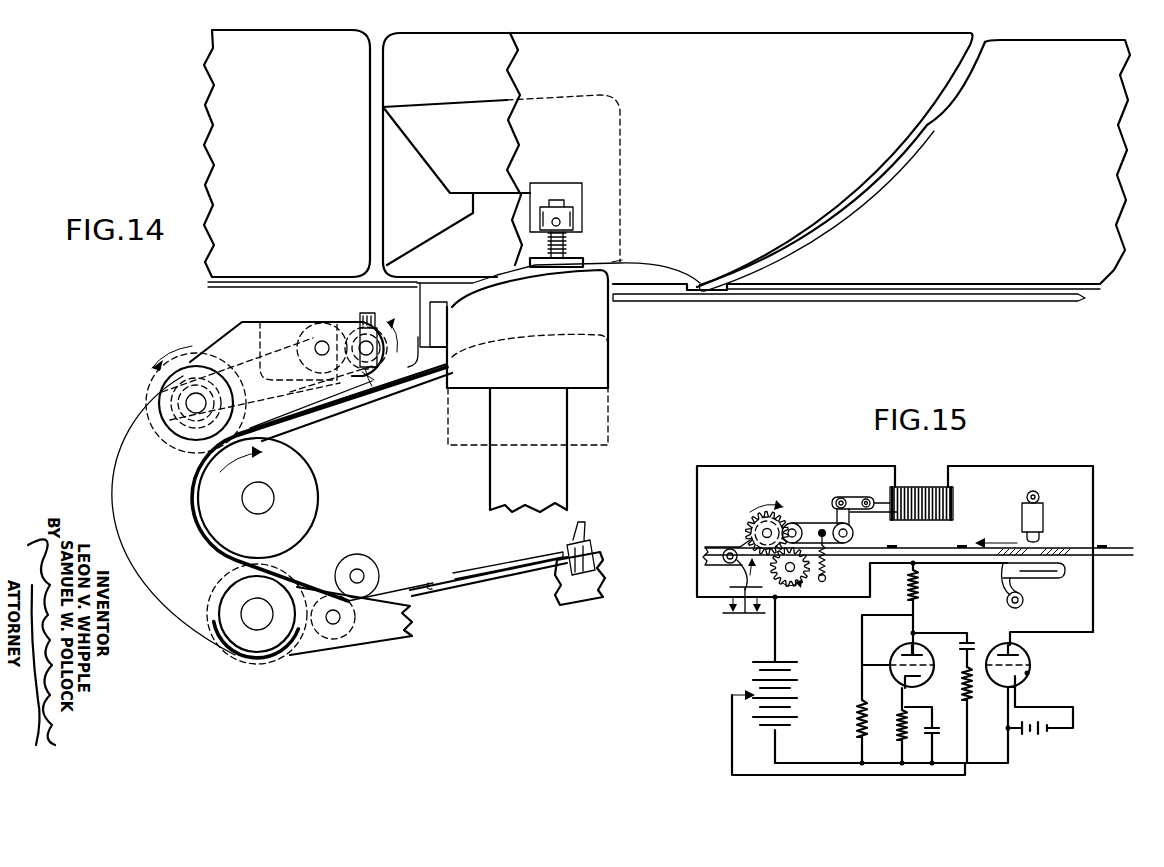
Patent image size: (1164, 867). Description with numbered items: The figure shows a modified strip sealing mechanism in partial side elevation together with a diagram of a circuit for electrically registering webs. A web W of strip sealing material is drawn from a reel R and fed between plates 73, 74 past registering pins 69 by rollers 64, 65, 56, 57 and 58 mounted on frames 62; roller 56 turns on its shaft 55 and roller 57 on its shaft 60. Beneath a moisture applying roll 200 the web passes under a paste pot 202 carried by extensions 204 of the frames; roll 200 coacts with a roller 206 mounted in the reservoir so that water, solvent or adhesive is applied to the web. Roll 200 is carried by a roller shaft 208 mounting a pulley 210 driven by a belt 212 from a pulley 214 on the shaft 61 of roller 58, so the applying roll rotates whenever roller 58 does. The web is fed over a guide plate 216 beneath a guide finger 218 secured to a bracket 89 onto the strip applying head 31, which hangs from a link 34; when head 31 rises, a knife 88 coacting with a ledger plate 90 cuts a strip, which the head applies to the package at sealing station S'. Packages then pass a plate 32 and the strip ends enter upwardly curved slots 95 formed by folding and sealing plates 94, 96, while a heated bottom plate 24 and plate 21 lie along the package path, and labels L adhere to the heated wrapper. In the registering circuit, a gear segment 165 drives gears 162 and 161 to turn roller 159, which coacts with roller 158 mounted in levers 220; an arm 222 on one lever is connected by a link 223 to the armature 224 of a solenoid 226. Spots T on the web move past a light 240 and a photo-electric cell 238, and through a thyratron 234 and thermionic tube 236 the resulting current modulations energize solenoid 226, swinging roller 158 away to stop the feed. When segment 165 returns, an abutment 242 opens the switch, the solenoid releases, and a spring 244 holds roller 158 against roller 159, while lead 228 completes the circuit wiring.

In FIG. 14, the plate 21 is at (288, 45).
In FIG. 14, the folding and sealing plate 94 is at (698, 55).
In FIG. 14, the upwardly curved slots 95 is at (877, 158).
In FIG. 14, the folding-sealing plate 96 is at (1030, 52).
In FIG. 14, the plate 32 is at (896, 300).
In FIG. 14, the heated bottom plate 24 is at (240, 282).
In FIG. 14, the label L is at (488, 282).
In FIG. 14, the sealing station S' is at (632, 247).
In FIG. 14, the ledger plate 90 is at (428, 292).
In FIG. 14, the bracket 89 is at (441, 308).
In FIG. 14, the guide finger 218 is at (418, 368).
In FIG. 14, the knife 88 is at (455, 330).
In FIG. 14, the strip applying head 31 is at (598, 318).
In FIG. 14, the link 34 is at (563, 468).
In FIG. 14, the extensions 204 is at (243, 328).
In FIG. 14, the paste pot 202 is at (268, 327).
In FIG. 14, the roller 206 is at (319, 340).
In FIG. 14, the moisture applying roll 200 is at (396, 340).
In FIG. 14, the roller shaft 208 is at (372, 386).
In FIG. 14, the guide plate 216 is at (372, 388).
In FIG. 14, the belt 212 is at (290, 395).
In FIG. 14, the pulley 210 is at (352, 380).
In FIG. 14, the pulley 214 is at (165, 397).
In FIG. 14, the roller 58 is at (160, 378).
In FIG. 14, the shaft 61 is at (187, 404).
In FIG. 14, the frames 62 is at (172, 612).
In FIG. 14, the roller 56 is at (306, 484).
In FIG. 14, the shaft 55 is at (272, 500).
In FIG. 14, the shaft 60 is at (257, 617).
In FIG. 14, the roller 57 is at (275, 658).
In FIG. 14, the roller 64 is at (343, 640).
In FIG. 14, the roller 65 is at (370, 566).
In FIG. 14, the web W is at (431, 582).
In FIG. 15, the web W is at (1117, 565).
In FIG. 14, the plate 73 is at (503, 573).
In FIG. 14, the plate 74 is at (510, 562).
In FIG. 14, the registering pins 69 is at (585, 542).
In FIG. 15, the solenoid 226 is at (921, 487).
In FIG. 15, the armature 224 is at (886, 503).
In FIG. 15, the link 223 is at (848, 497).
In FIG. 15, the arm 222 is at (853, 525).
In FIG. 15, the levers 220 is at (811, 523).
In FIG. 15, the roller 158 is at (790, 523).
In FIG. 15, the gear 162 is at (752, 520).
In FIG. 15, the gear segment 165 is at (743, 548).
In FIG. 15, the abutment 242 is at (744, 586).
In FIG. 15, the light 240 is at (740, 613).
In FIG. 15, the gear 161 is at (794, 588).
In FIG. 15, the roller 159 is at (820, 557).
In FIG. 15, the spring 244 is at (828, 565).
In FIG. 15, the registering spots T is at (887, 548).
In FIG. 15, the photo-electric cell 238 is at (1037, 578).
In FIG. 15, the relay R is at (749, 662).
In FIG. 15, the thermionic tube 236 is at (902, 652).
In FIG. 15, the thyratron 234 is at (1023, 678).
In FIG. 15, the lead 228 is at (1072, 633).